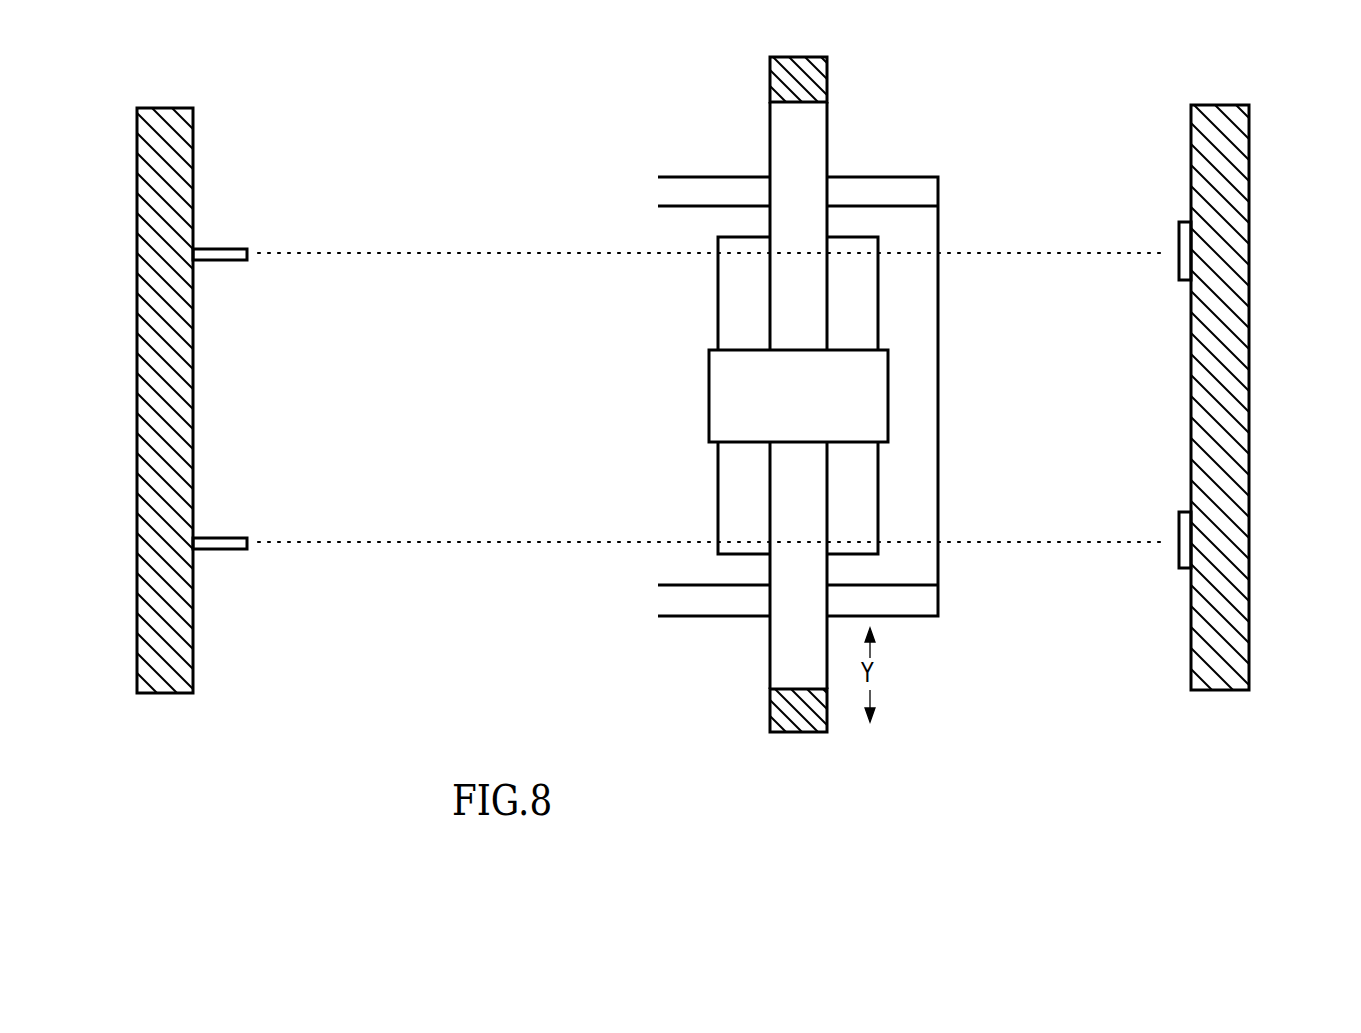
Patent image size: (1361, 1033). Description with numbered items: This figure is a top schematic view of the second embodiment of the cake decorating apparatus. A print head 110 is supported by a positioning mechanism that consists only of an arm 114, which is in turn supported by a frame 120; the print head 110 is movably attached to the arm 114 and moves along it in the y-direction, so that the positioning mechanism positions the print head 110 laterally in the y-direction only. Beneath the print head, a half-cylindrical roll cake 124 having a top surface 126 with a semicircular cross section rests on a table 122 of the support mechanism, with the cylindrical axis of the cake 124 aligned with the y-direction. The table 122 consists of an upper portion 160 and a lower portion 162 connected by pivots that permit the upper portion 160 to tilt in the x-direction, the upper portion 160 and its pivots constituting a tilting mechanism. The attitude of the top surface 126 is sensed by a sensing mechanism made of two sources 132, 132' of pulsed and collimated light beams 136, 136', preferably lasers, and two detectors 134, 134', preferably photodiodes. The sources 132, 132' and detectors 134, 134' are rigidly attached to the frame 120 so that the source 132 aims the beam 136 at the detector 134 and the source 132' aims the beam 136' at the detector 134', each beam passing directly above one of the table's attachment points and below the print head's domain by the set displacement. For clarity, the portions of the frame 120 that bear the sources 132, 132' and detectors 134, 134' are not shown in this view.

The print head 110 is at (830, 408).
The arm 114 is at (798, 138).
The frame 120 is at (145, 448).
The table 122 is at (958, 155).
The half-cylindrical roll cake 124 is at (690, 395).
The top surface 126 is at (747, 290).
The source 132 is at (238, 508).
The source 132' is at (242, 222).
The detector 134 is at (1149, 574).
The detector 134' is at (1149, 289).
The beam 136 is at (711, 575).
The beam 136' is at (711, 286).
The upper portion 160 is at (805, 385).
The lower portion 162 is at (697, 187).